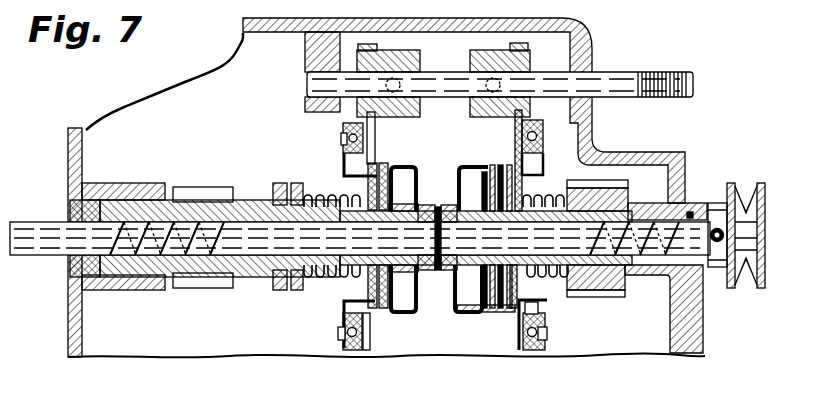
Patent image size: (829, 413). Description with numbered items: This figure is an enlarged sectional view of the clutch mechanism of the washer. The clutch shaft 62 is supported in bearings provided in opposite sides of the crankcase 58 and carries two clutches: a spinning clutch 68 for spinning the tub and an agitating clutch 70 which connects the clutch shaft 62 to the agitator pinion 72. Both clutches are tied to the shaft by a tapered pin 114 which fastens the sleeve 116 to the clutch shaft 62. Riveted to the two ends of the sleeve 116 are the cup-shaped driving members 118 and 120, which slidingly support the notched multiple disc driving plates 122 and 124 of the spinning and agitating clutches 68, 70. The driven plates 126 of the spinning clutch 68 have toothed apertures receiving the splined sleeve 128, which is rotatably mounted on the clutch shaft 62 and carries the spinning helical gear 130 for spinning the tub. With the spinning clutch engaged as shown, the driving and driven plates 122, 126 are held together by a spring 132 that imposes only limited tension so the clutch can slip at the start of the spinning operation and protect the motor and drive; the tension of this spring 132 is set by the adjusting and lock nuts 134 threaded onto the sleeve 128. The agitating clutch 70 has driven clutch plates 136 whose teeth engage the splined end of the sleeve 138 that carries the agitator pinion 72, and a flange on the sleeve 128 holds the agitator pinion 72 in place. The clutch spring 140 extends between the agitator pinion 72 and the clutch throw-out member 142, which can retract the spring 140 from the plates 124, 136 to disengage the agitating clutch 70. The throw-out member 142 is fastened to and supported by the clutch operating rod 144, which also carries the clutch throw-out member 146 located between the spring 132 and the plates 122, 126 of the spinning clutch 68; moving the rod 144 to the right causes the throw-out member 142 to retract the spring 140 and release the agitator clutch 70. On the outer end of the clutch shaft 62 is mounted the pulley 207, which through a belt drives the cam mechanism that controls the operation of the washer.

The crankcase 58 is at (70, 316).
The clutch shaft 62 is at (37, 228).
The spinning clutch 68 is at (383, 318).
The agitating clutch 70 is at (494, 316).
The agitator pinion 72 is at (615, 293).
The tapered pin 114 is at (432, 200).
The sleeve 116 is at (423, 270).
The cup-shaped driving member 118 is at (398, 167).
The cup-shaped driving member 120 is at (463, 173).
The multiple disc driving plates 122 is at (388, 163).
The multiple disc driving plates 124 is at (501, 173).
The driven plates 126 is at (393, 300).
The splined sleeve 128 is at (257, 272).
The spinning helical gear 130 is at (203, 280).
The spring 132 is at (323, 196).
The adjusting and lock nuts 134 is at (287, 187).
The driven clutch plates 136 is at (472, 313).
The sleeve 138 is at (537, 274).
The clutch spring 140 is at (542, 282).
The clutch throw-out member 142 is at (543, 162).
The clutch operating rod 144 is at (443, 81).
The clutch throw-out member 146 is at (343, 157).
The pulley 207 is at (745, 203).